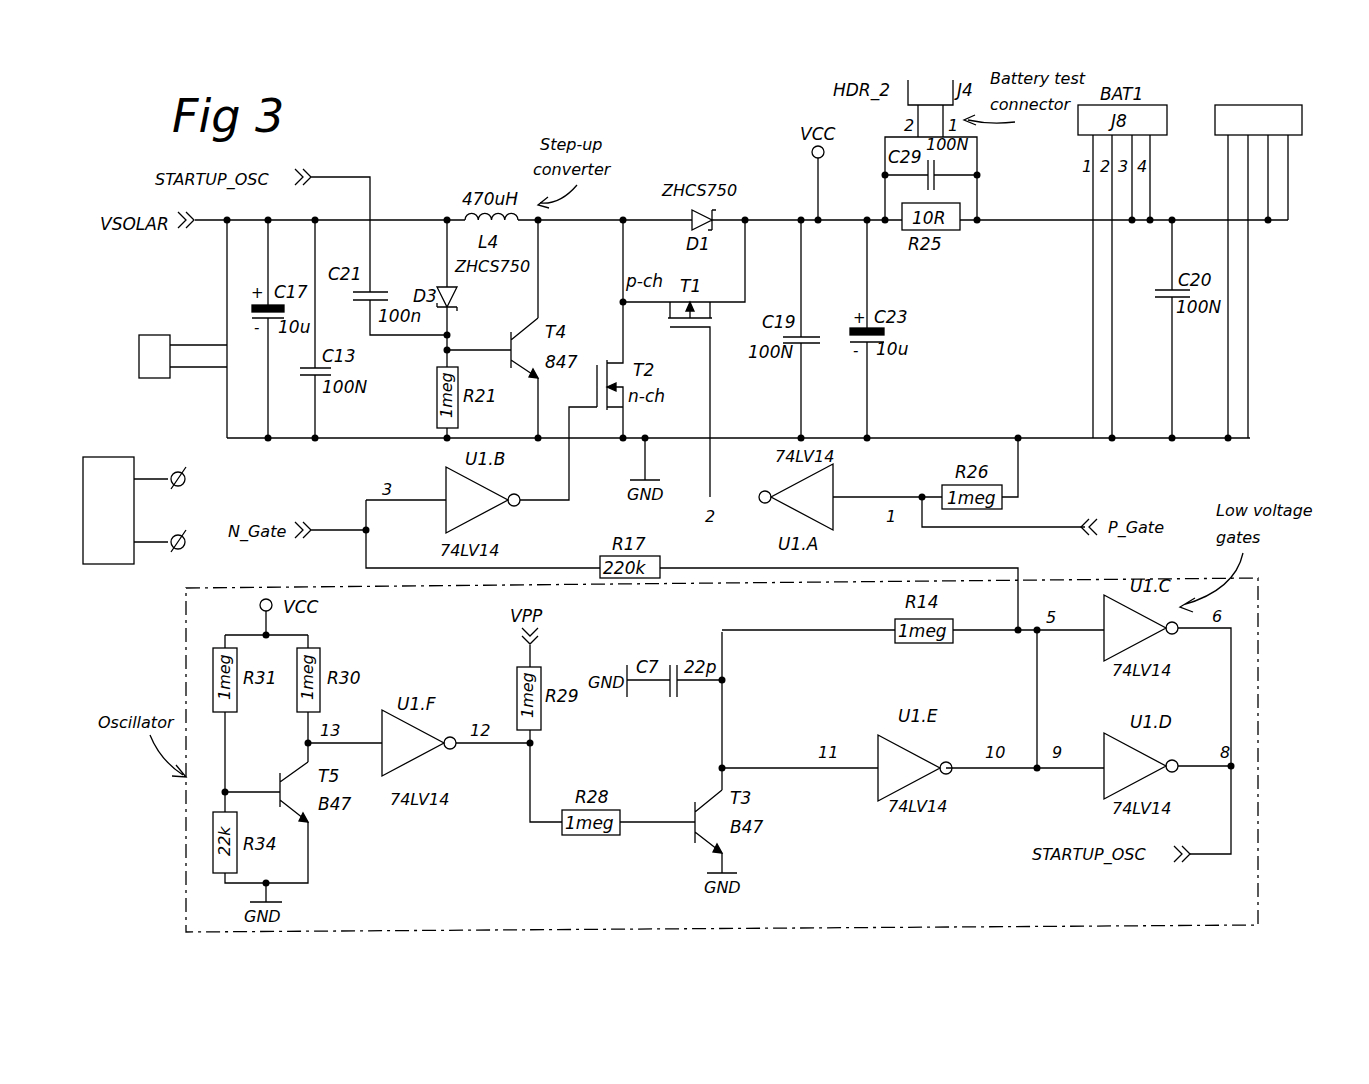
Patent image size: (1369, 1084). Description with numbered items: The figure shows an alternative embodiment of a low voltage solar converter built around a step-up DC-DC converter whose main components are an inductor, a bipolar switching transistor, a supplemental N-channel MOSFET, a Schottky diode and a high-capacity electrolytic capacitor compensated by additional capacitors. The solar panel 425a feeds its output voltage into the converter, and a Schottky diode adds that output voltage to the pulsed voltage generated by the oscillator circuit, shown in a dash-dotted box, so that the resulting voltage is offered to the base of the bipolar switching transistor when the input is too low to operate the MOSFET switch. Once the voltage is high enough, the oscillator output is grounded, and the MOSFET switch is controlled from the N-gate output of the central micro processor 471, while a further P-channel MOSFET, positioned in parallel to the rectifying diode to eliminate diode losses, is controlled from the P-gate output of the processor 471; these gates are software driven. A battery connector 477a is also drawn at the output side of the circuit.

The solar panel 425a is at (123, 357).
The central micro processor 471 is at (95, 472).
The battery connector J3 477a is at (1321, 126).